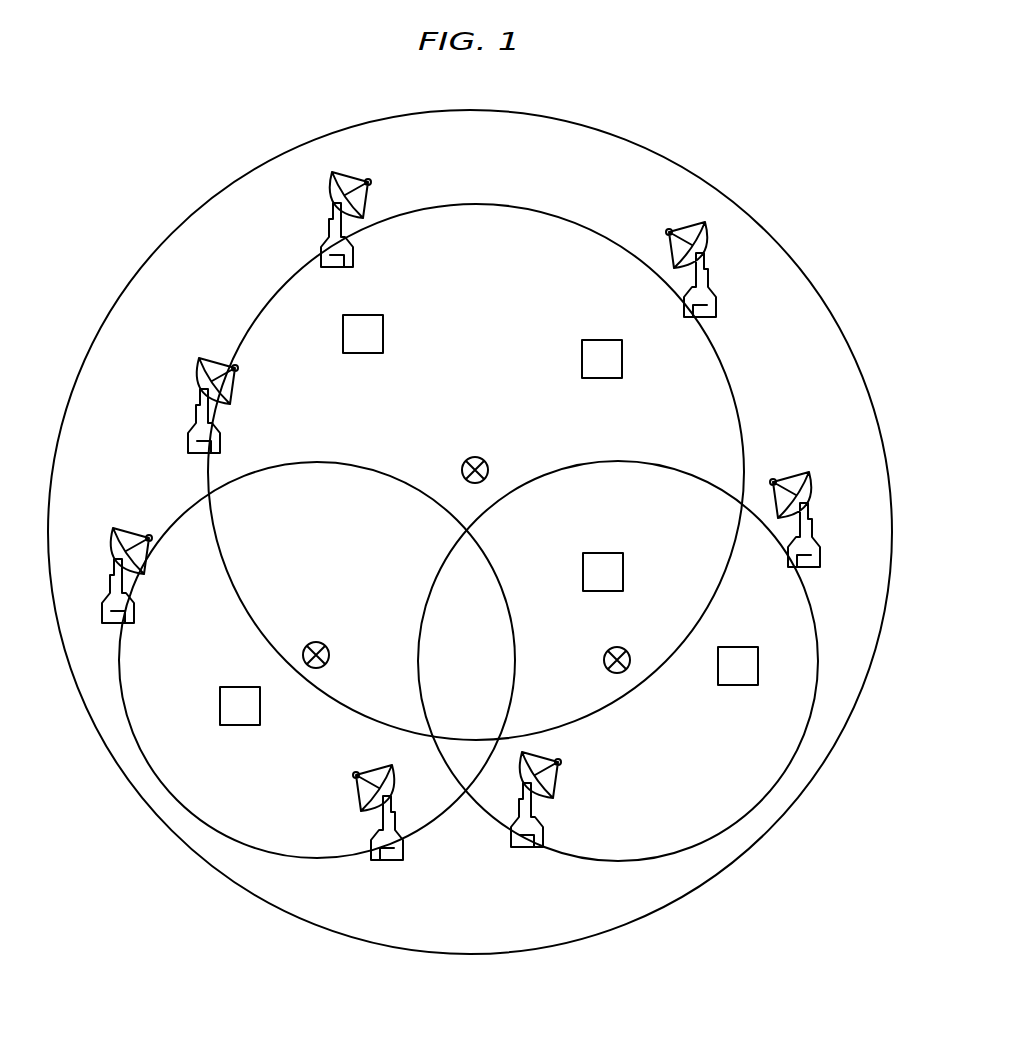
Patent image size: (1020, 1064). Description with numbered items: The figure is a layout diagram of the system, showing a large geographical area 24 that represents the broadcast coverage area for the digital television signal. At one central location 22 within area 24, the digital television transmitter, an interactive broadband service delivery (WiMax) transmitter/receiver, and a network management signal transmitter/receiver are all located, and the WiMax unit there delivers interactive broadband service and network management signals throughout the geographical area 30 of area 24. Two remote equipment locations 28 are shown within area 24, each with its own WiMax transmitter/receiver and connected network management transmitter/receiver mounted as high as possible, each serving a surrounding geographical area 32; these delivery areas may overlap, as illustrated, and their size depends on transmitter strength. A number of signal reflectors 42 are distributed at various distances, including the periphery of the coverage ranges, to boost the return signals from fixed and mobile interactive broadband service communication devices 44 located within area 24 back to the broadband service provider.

The central location 22 is at (488, 465).
The geographical area 24 is at (667, 158).
The remote equipment locations 28 is at (328, 646).
The geographical area 30 is at (578, 217).
The geographical area 32 is at (386, 468).
The signal reflectors 42 is at (328, 232).
The interactive broadband service communication devices 44 is at (375, 315).